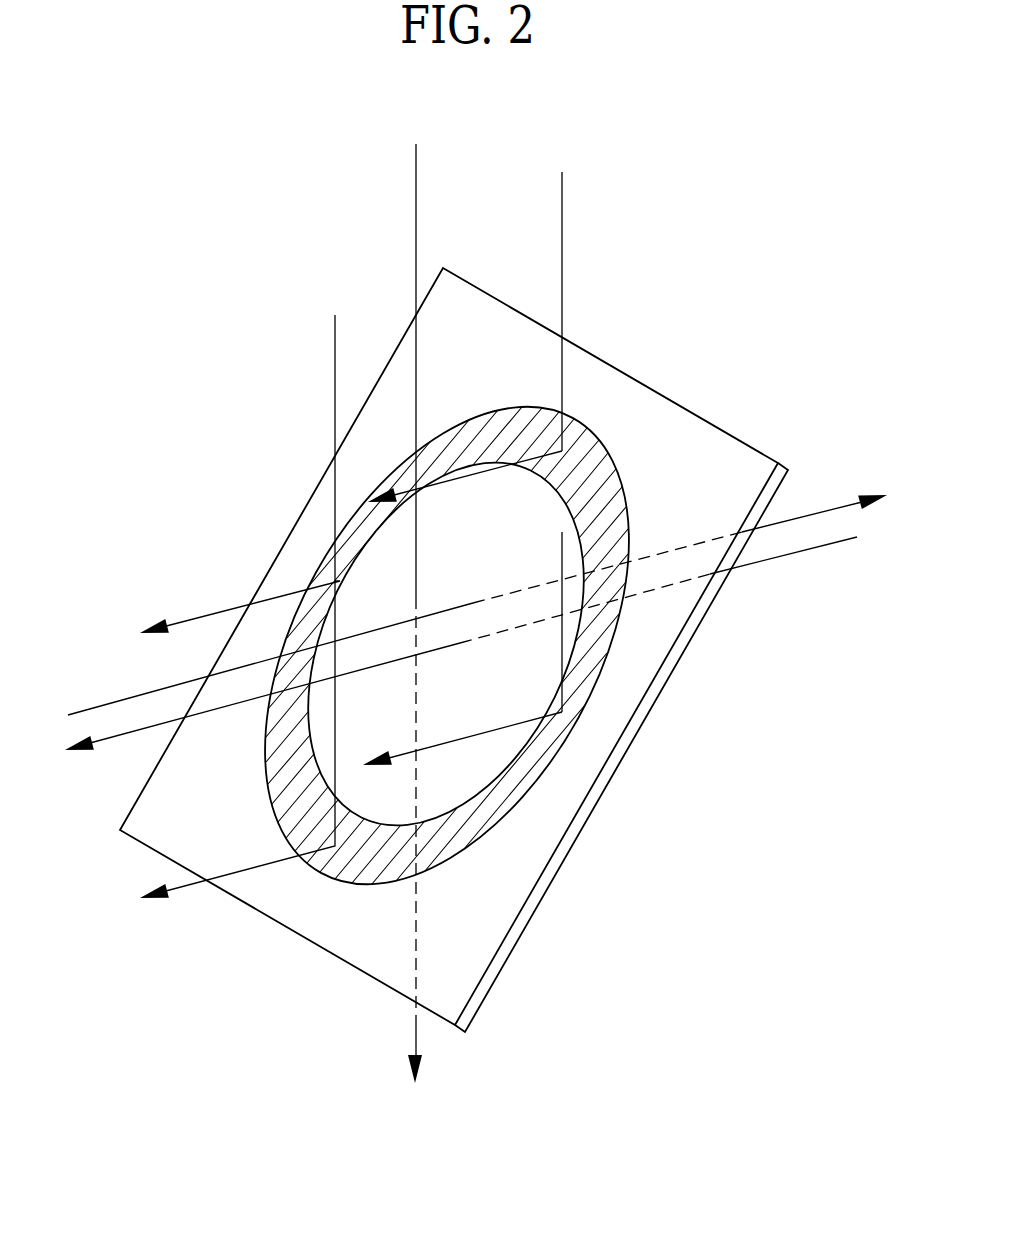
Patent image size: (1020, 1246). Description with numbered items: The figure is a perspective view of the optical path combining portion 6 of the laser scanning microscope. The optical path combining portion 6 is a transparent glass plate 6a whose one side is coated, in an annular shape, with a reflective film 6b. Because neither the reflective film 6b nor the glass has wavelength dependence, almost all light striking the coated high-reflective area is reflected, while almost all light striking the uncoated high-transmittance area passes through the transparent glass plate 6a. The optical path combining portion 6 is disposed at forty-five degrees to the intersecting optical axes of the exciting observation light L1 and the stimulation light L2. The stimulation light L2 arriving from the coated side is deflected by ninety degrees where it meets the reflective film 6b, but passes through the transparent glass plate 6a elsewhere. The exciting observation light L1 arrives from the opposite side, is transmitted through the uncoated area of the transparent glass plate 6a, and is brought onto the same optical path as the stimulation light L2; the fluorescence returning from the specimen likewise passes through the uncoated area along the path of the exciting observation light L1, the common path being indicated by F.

The optical path combining portion 6 is at (469, 611).
The transparent glass plate 6a is at (670, 665).
The reflective film 6b is at (620, 502).
The exciting observation light L1 is at (108, 742).
The stimulation light L2 is at (417, 198).
The optical axis F is at (110, 700).